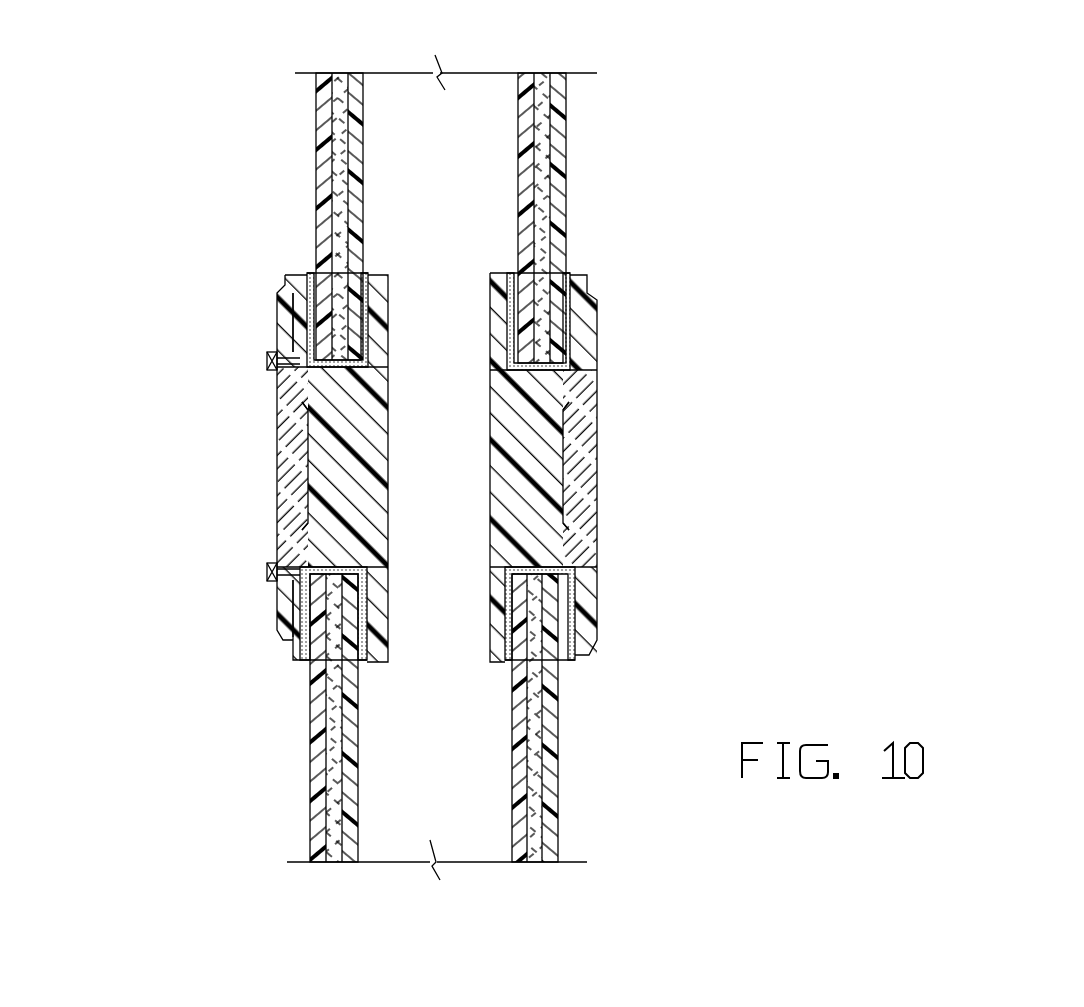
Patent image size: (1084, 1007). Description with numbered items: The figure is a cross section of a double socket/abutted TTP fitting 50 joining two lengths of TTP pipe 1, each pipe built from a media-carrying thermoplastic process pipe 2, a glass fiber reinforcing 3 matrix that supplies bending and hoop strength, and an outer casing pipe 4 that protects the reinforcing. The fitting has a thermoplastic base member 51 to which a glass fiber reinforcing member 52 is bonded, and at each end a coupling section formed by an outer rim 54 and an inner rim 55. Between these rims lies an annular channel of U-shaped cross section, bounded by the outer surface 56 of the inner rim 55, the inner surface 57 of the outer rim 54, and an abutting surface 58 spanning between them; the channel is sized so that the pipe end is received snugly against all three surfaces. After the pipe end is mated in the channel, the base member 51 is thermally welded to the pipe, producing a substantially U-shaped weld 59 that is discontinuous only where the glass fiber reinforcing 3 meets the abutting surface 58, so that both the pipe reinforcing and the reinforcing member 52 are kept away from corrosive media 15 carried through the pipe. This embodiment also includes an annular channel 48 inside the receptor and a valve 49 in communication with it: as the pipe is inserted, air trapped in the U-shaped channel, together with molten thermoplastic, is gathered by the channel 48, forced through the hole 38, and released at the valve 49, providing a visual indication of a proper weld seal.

The TTP pipe 1 is at (664, 120).
The process pipe 2 is at (523, 137).
The glass fiber reinforcing 3 is at (540, 176).
The casing pipe 4 is at (439, 467).
The media 15 is at (428, 467).
The hole 38 is at (284, 322).
The channel 48 is at (592, 350).
The valve 49 is at (267, 361).
The TTP fitting 50 is at (388, 476).
The base member 51 is at (492, 453).
The reinforcing member 52 is at (570, 467).
The outer rim 54 is at (297, 274).
The inner rim 55 is at (388, 272).
The outer surface of the inner rim 56 is at (510, 305).
The inner surface of the outer rim 57 is at (588, 278).
The abutting surface 58 is at (368, 384).
The U-shaped weld 59 is at (572, 322).